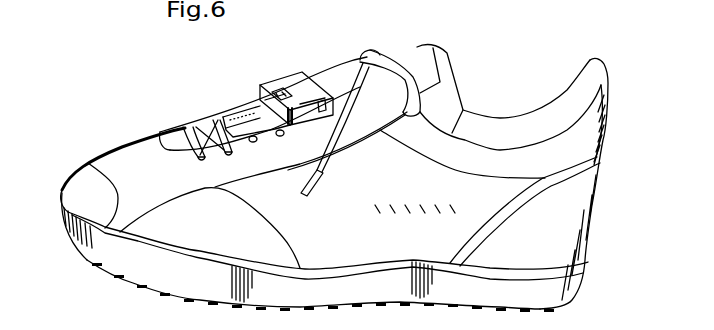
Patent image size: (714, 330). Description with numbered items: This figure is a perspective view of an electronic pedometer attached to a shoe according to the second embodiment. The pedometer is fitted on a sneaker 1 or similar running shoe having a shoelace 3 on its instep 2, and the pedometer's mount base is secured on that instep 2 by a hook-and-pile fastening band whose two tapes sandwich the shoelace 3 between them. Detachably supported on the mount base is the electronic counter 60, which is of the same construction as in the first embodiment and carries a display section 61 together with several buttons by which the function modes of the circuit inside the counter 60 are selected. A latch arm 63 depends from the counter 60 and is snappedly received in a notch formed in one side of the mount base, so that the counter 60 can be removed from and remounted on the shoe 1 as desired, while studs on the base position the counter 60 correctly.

The sneaker 1 is at (587, 245).
The instep 2 is at (275, 155).
The shoelace 3 is at (215, 118).
The electronic counter 60 is at (303, 68).
The display section 61 is at (278, 80).
The latch arm 63 is at (313, 112).